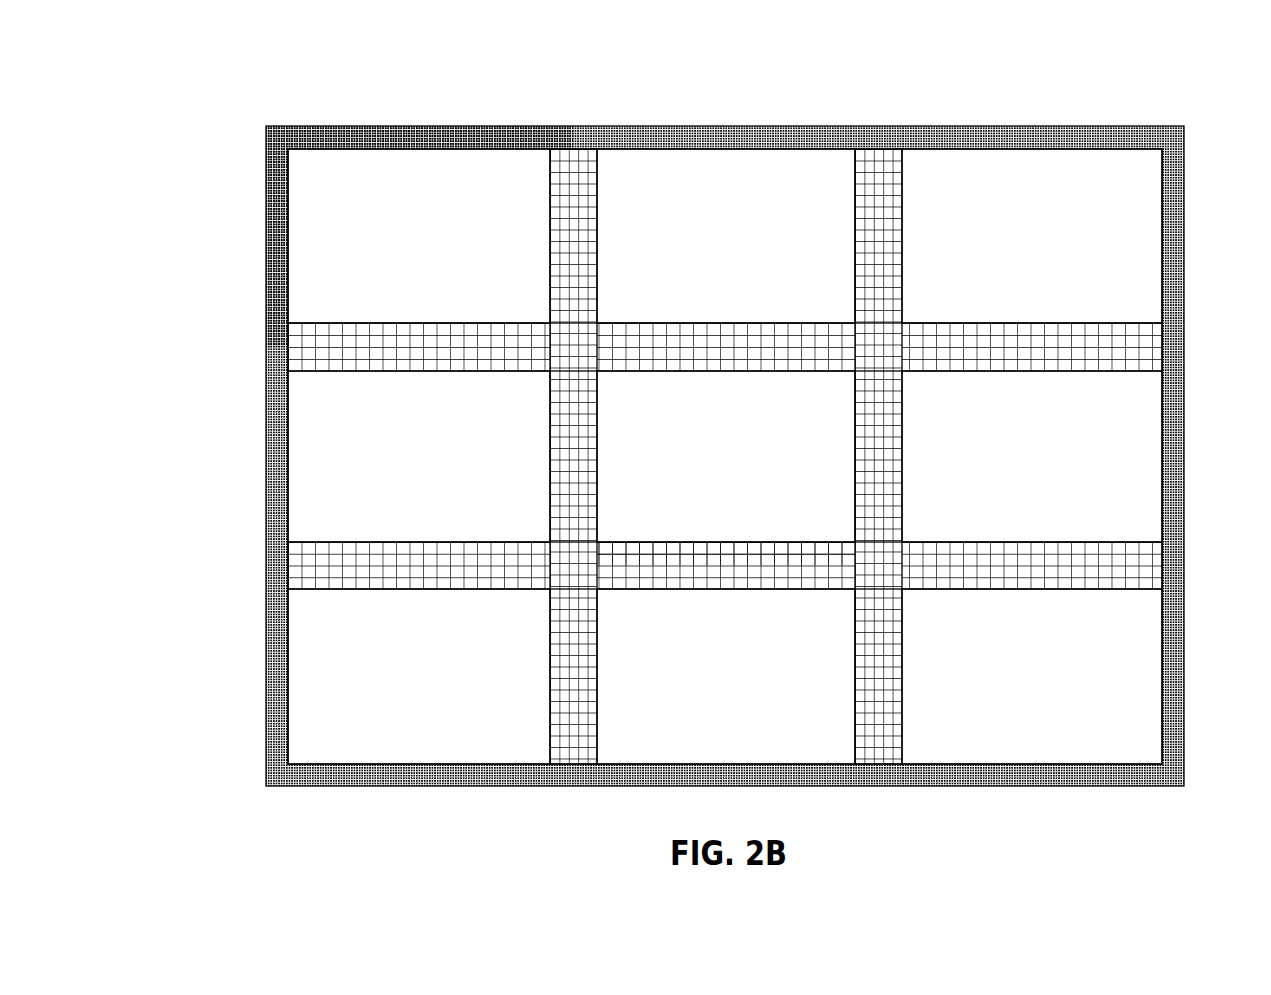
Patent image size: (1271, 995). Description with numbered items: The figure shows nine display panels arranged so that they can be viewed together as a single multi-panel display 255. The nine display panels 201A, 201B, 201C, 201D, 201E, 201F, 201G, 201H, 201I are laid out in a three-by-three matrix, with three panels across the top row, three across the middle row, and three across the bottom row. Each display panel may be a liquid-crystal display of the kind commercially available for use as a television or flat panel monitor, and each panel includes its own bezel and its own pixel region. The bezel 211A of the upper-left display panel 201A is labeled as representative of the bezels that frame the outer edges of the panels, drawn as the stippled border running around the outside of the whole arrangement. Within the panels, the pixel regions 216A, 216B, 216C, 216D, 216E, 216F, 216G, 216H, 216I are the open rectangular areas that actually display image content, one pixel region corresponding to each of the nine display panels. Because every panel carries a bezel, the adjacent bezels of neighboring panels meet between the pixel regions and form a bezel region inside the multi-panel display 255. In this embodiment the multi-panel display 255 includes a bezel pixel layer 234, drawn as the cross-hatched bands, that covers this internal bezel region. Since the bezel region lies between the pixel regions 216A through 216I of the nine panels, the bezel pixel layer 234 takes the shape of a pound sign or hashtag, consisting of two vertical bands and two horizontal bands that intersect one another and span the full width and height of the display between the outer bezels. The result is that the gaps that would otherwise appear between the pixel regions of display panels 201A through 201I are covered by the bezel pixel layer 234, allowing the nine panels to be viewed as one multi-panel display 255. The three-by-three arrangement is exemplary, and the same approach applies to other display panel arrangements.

The display panel 201A is at (369, 212).
The display panel 201B is at (725, 204).
The display panel 201C is at (1070, 236).
The display panel 201D is at (369, 456).
The display panel 201E is at (921, 456).
The display panel 201F is at (1031, 456).
The display panel 201G is at (371, 675).
The display panel 201H is at (735, 709).
The display panel 201I is at (1071, 675).
The bezel 211A is at (473, 129).
The pixel region 216A is at (398, 255).
The pixel region 216B is at (709, 255).
The pixel region 216C is at (1011, 255).
The pixel region 216D is at (406, 470).
The pixel region 216E is at (708, 470).
The pixel region 216F is at (1019, 470).
The pixel region 216G is at (398, 693).
The pixel region 216H is at (708, 693).
The pixel region 216I is at (1029, 693).
The bezel pixel layer 234 is at (608, 552).
The multi-panel display 255 is at (1110, 85).